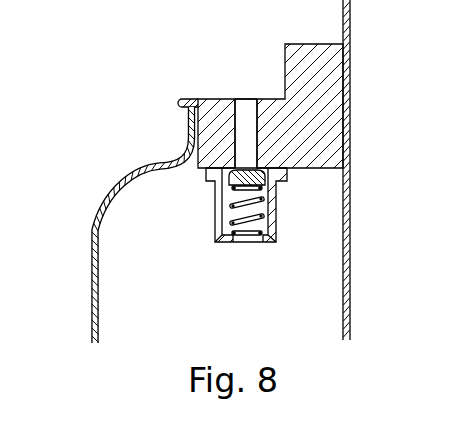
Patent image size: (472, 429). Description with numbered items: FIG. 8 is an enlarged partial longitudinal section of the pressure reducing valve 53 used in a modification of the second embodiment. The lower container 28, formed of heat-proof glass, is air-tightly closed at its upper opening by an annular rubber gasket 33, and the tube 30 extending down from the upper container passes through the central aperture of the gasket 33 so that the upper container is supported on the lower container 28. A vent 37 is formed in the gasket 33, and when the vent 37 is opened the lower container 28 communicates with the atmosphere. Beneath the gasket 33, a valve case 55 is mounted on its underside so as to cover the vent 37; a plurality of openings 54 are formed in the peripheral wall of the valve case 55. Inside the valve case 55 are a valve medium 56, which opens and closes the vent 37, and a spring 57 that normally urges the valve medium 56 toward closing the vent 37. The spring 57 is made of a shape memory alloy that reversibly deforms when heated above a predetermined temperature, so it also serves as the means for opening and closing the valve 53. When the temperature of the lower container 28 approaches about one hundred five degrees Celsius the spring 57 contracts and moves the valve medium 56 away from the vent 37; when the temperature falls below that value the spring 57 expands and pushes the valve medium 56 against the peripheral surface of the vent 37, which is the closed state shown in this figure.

The lower container 28 is at (91, 289).
The tube 30 is at (343, 312).
The annular rubber gasket 33 is at (308, 44).
The vent 37 is at (255, 118).
The pressure reducing valve 53 is at (272, 245).
The openings 54 is at (277, 207).
The valve case 55 is at (215, 239).
The valve medium 56 is at (228, 182).
The spring 57 is at (232, 203).